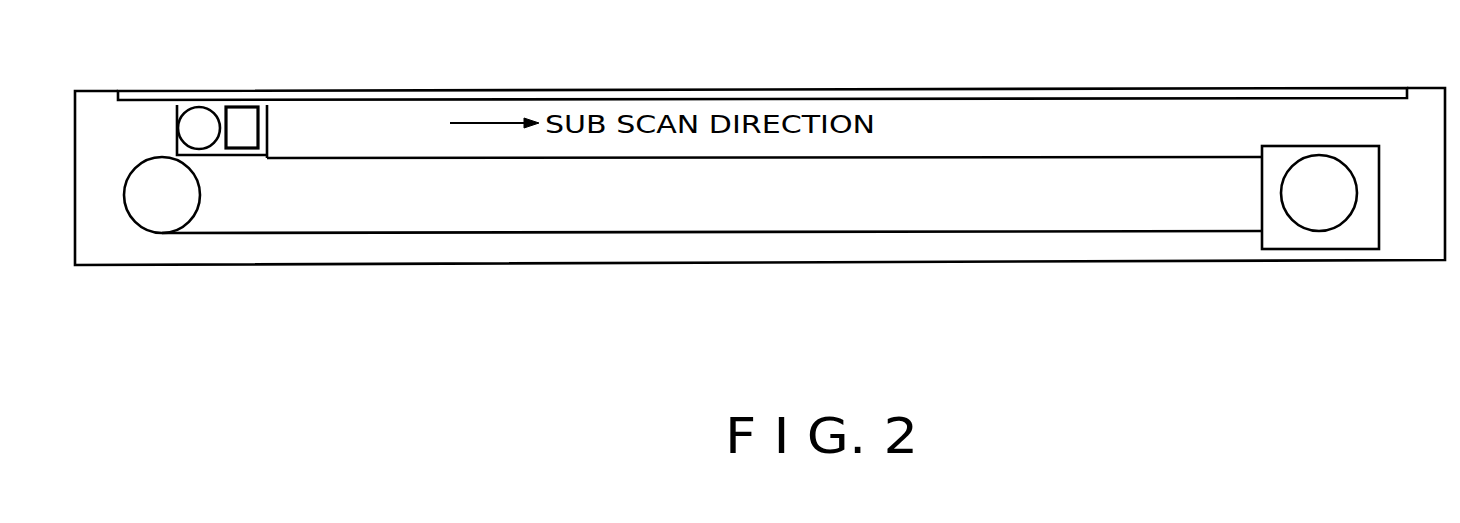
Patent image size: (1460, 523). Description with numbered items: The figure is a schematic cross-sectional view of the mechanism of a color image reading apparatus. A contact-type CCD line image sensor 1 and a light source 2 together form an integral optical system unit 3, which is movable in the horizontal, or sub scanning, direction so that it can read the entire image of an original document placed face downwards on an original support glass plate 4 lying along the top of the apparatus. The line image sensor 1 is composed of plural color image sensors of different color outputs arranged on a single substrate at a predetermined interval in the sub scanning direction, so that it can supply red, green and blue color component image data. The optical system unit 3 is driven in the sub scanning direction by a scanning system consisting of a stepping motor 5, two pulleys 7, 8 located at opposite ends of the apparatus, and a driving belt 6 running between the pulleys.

The contact-type CCD line image sensor 1 is at (245, 118).
The light source 2 is at (199, 128).
The optical system unit 3 is at (233, 156).
The original support glass plate 4 is at (1124, 90).
The stepping motor 5 is at (1309, 250).
The driving belt 6 is at (688, 233).
The pulley 7 is at (163, 215).
The pulley 8 is at (1337, 213).